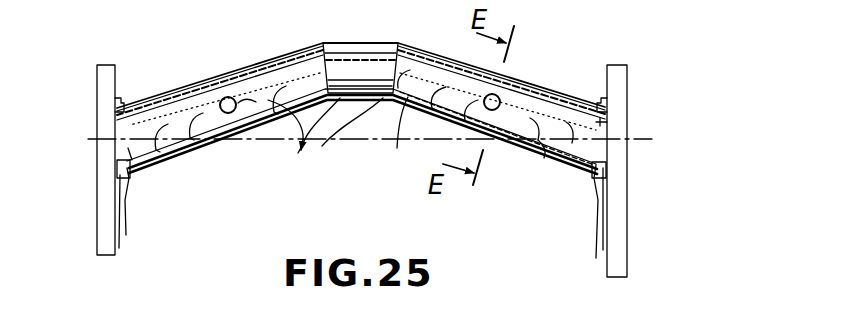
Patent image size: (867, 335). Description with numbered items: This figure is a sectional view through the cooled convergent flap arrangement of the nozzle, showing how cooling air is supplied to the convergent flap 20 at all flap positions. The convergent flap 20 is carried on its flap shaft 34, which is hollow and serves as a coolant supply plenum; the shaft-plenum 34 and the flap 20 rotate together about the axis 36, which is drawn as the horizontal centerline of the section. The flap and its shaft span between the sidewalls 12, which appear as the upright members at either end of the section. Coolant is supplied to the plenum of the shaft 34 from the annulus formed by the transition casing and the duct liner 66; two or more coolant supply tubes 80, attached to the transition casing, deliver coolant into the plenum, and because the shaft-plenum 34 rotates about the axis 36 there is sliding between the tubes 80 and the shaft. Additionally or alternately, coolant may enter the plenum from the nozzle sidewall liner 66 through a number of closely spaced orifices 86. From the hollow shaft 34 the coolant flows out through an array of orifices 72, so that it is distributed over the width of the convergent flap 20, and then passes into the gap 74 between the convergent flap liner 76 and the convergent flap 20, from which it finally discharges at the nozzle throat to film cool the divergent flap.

The sidewalls 12 is at (100, 203).
The convergent flap 20 is at (413, 96).
The flap shaft 34 is at (355, 43).
The axis 36 is at (89, 139).
The duct liner 66 is at (128, 210).
The array of orifices 72 is at (342, 135).
The gap 74 is at (536, 152).
The convergent flap liner 76 is at (399, 135).
The coolant supply tubes 80 is at (228, 97).
The orifices 86 is at (115, 179).